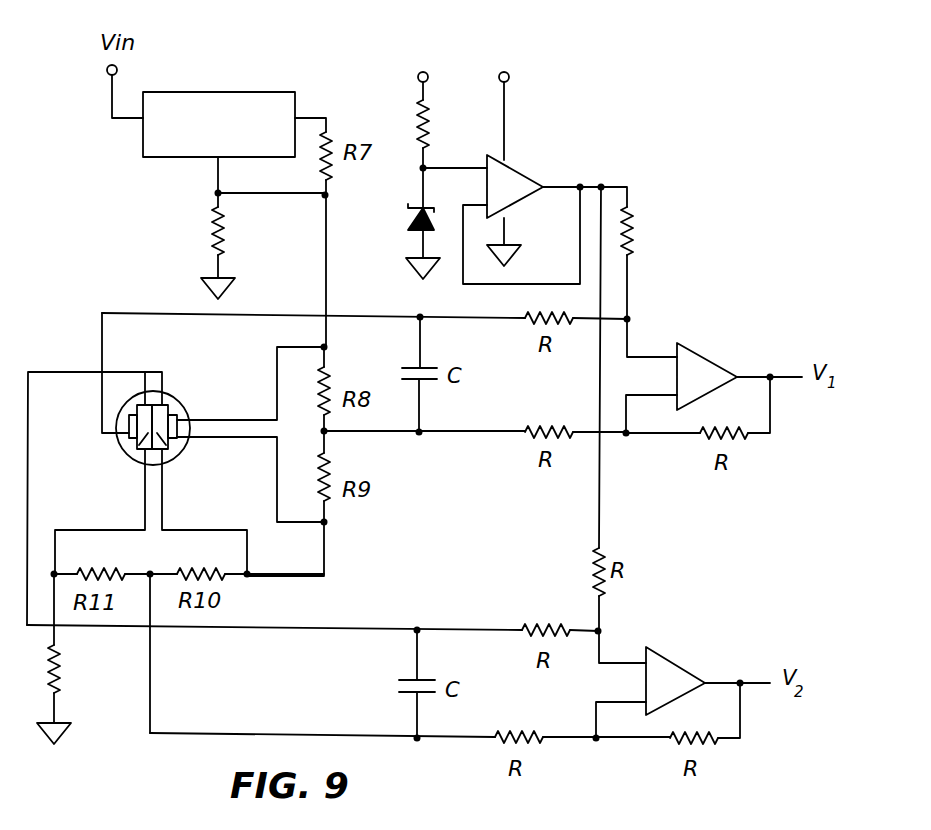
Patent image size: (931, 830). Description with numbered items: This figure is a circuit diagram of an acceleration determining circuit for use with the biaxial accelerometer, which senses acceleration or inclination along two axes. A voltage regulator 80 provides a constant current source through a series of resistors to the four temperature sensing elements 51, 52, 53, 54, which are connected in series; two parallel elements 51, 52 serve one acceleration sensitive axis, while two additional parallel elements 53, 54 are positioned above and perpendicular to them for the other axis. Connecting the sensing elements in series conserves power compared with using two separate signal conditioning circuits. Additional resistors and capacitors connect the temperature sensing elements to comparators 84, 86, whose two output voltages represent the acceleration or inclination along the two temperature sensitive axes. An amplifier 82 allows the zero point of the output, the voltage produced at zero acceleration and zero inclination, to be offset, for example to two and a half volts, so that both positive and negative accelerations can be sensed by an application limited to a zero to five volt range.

The voltage regulator 80 is at (267, 92).
The amplifier 82 is at (531, 160).
The comparator 84 is at (711, 361).
The comparator 86 is at (680, 663).
The temperature sensing element 51 is at (128, 453).
The temperature sensing element 52 is at (172, 445).
The temperature sensing element 53 is at (173, 432).
The temperature sensing element 54 is at (135, 417).